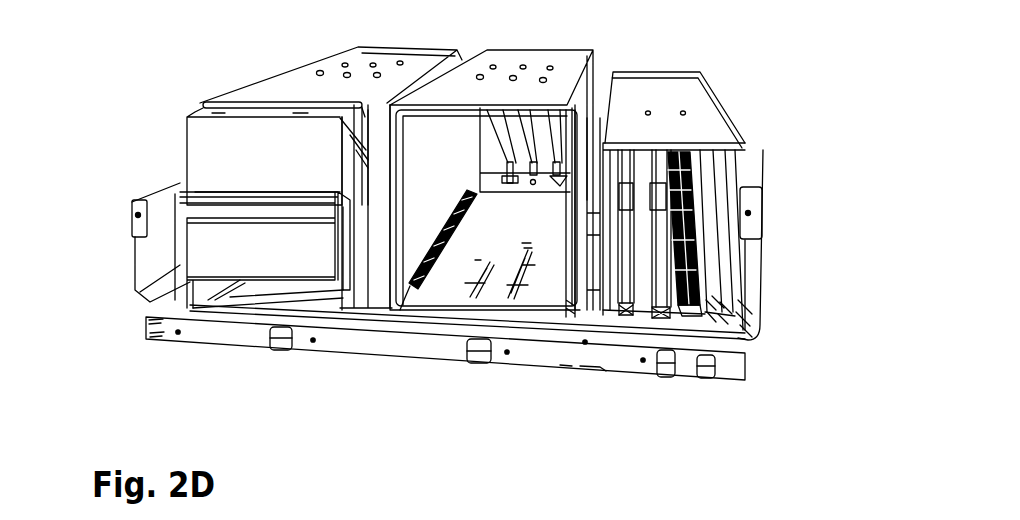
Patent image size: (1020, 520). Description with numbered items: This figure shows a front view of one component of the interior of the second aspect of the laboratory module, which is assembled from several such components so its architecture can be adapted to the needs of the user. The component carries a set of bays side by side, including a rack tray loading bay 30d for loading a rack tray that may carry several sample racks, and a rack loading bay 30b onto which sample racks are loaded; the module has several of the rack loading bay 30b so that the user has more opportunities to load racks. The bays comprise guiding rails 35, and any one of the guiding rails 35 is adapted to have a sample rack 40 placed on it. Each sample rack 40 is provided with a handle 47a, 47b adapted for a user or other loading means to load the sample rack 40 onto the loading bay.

The guiding rails 35 is at (667, 312).
The rack tray loading bay 30d is at (338, 305).
The rack loading bay 30b is at (640, 318).
The sample rack 40 is at (197, 157).
The handle 47a is at (710, 263).
The handle 47b is at (197, 239).